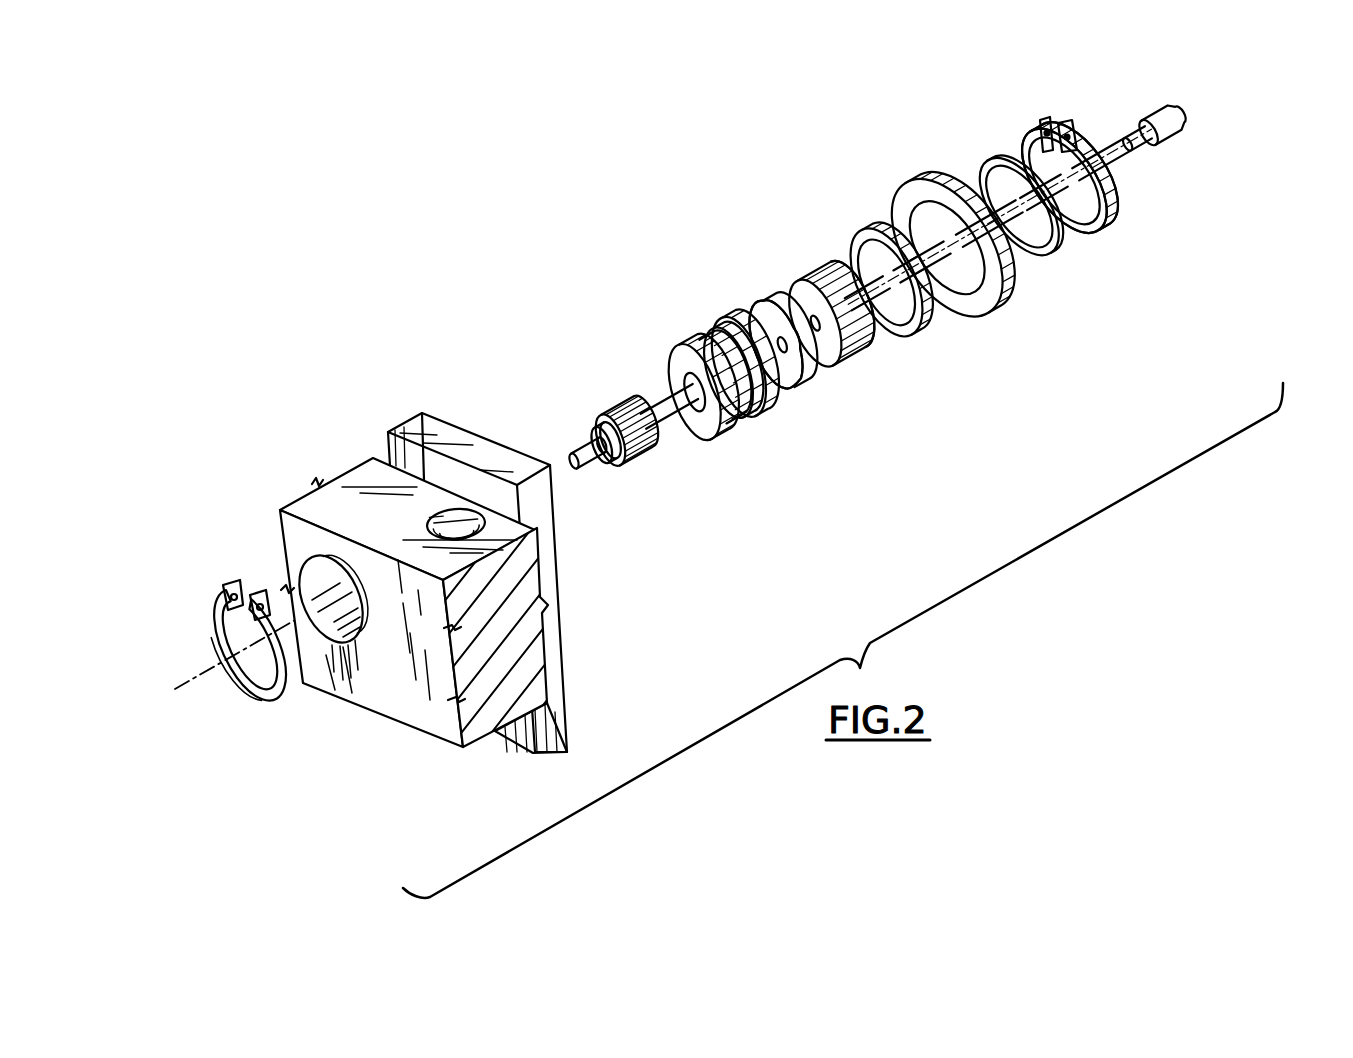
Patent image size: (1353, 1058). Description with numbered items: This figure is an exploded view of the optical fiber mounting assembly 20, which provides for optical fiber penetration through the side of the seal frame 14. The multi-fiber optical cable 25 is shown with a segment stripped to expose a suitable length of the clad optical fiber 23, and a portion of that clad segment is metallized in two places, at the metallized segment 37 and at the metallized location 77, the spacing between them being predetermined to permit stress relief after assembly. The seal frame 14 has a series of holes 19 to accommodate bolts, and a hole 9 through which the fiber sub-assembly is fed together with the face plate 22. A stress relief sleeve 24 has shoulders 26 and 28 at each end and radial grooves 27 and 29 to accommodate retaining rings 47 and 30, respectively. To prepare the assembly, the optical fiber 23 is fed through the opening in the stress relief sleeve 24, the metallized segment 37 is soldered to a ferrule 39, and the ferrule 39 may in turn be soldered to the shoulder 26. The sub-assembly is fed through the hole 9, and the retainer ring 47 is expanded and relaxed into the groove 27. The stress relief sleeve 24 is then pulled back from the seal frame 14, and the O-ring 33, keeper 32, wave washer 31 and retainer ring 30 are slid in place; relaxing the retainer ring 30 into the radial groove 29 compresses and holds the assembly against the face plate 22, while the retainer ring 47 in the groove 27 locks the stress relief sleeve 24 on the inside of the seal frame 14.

The hole 9 is at (358, 638).
The seal frame 14 is at (352, 483).
The holes 19 is at (461, 517).
The optical fiber mounting assembly 20 is at (862, 466).
The face plate 22 is at (567, 723).
The clad optical fiber 23 is at (678, 420).
The stress relief sleeve 24 is at (728, 333).
The multi-fiber optical cable 25 is at (1160, 114).
The shoulder 26 is at (727, 430).
The radial groove 27 is at (746, 426).
The shoulder 28 is at (857, 357).
The radial groove 29 is at (777, 284).
The retainer ring 30 is at (1032, 150).
The wave washer 31 is at (993, 157).
The keeper 32 is at (918, 187).
The O-ring 33 is at (857, 242).
The metallized segment 37 is at (1138, 145).
The ferrule 39 is at (600, 418).
The retainer ring 47 is at (280, 700).
The metallized location 77 is at (594, 463).